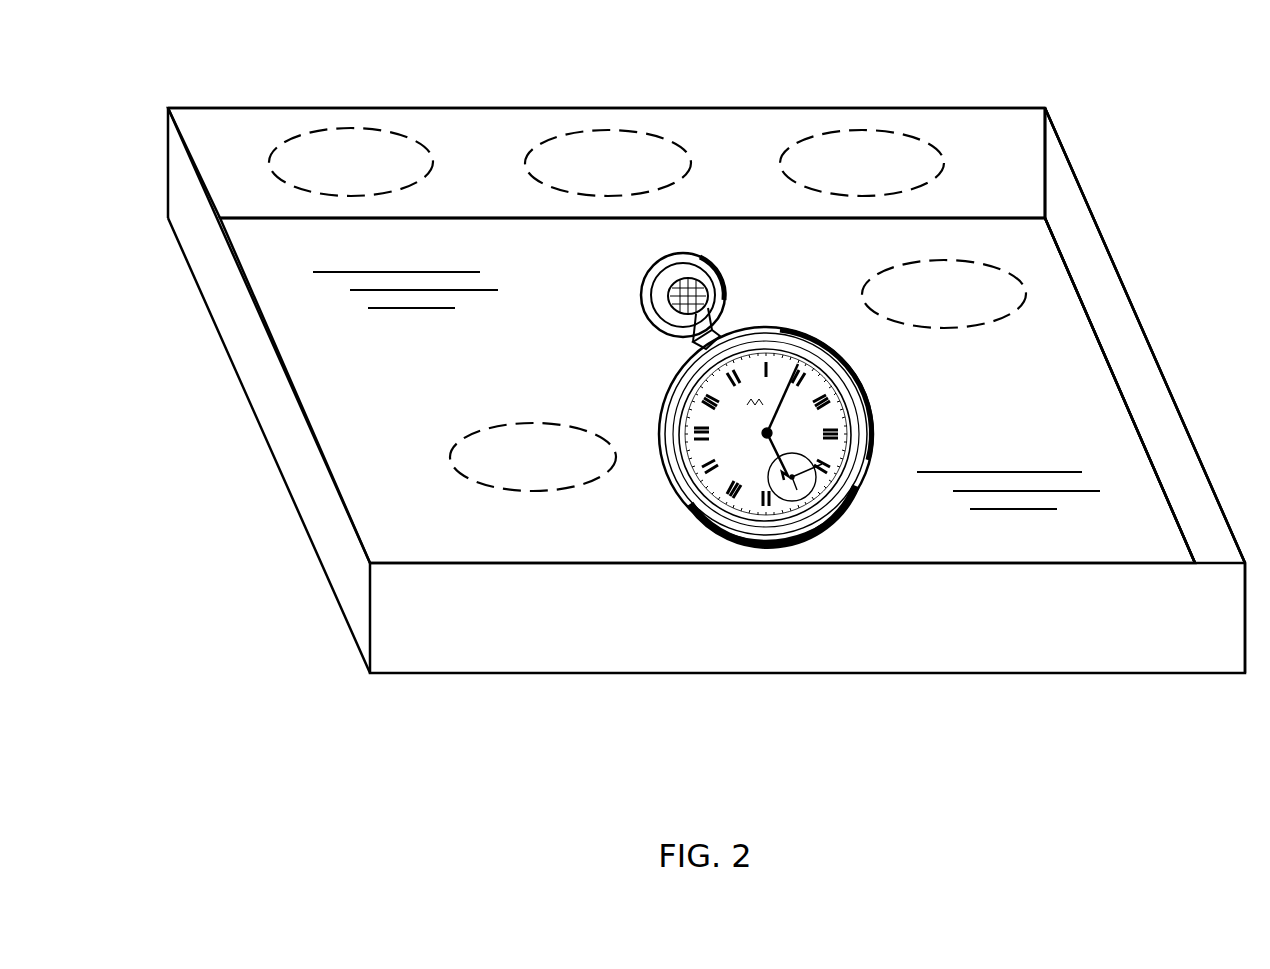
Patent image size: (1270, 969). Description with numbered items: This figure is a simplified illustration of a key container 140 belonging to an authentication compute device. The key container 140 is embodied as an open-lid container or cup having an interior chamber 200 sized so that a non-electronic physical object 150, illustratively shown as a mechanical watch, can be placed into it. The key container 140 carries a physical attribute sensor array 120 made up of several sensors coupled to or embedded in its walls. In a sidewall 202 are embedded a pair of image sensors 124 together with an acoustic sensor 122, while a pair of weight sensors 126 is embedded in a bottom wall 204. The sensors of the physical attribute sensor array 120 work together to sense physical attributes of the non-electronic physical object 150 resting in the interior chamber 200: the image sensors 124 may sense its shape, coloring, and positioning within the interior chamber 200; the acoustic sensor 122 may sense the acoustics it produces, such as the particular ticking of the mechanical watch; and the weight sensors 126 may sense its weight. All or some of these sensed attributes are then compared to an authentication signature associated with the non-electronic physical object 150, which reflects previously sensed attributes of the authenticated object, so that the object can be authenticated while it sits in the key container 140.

The physical attribute sensor array 120 is at (241, 122).
The acoustic sensor 122 is at (591, 176).
The image sensors 124 is at (334, 175).
The weight sensors 126 is at (927, 307).
The key container 140 is at (1045, 104).
The non-electronic physical object 150 is at (777, 330).
The interior chamber 200 is at (1063, 236).
The sidewall 202 is at (749, 117).
The bottom wall 204 is at (586, 371).